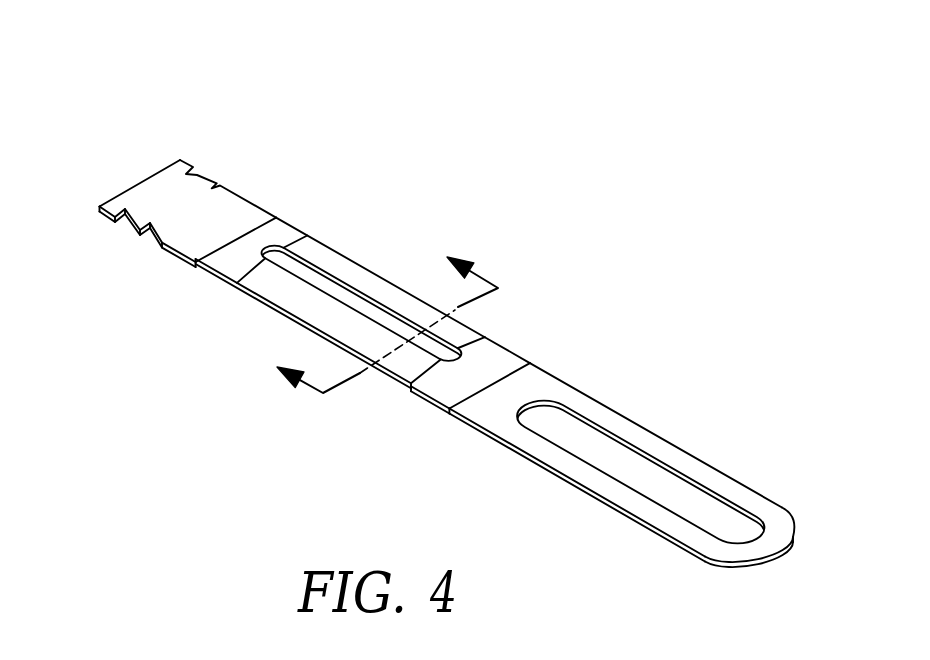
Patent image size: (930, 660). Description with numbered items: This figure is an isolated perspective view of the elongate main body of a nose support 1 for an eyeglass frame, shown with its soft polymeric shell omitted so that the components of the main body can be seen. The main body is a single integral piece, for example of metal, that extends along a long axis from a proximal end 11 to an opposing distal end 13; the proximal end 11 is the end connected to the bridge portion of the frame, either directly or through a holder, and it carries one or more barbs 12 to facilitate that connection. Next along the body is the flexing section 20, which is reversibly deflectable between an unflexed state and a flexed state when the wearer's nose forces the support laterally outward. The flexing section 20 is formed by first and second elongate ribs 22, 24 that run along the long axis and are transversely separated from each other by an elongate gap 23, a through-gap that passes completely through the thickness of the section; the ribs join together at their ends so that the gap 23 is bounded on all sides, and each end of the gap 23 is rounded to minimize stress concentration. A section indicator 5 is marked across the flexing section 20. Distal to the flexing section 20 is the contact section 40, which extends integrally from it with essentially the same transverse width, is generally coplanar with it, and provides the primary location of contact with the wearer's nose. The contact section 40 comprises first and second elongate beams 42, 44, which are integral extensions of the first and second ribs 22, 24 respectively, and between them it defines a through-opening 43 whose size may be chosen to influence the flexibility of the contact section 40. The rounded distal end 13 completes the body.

The nose support 1 is at (578, 222).
The proximal end 11 is at (137, 92).
The barb 12 is at (220, 183).
The distal end 13 is at (768, 571).
The flexing section 20 is at (228, 388).
The first elongate rib 22 is at (282, 288).
The elongate gap 23 is at (302, 273).
The second elongate rib 24 is at (363, 272).
The contact section 40 is at (661, 572).
The first elongate beam 42 is at (622, 496).
The through-opening 43 is at (594, 450).
The second elongate beam 44 is at (681, 458).
The section line 5- 5 is at (391, 333).